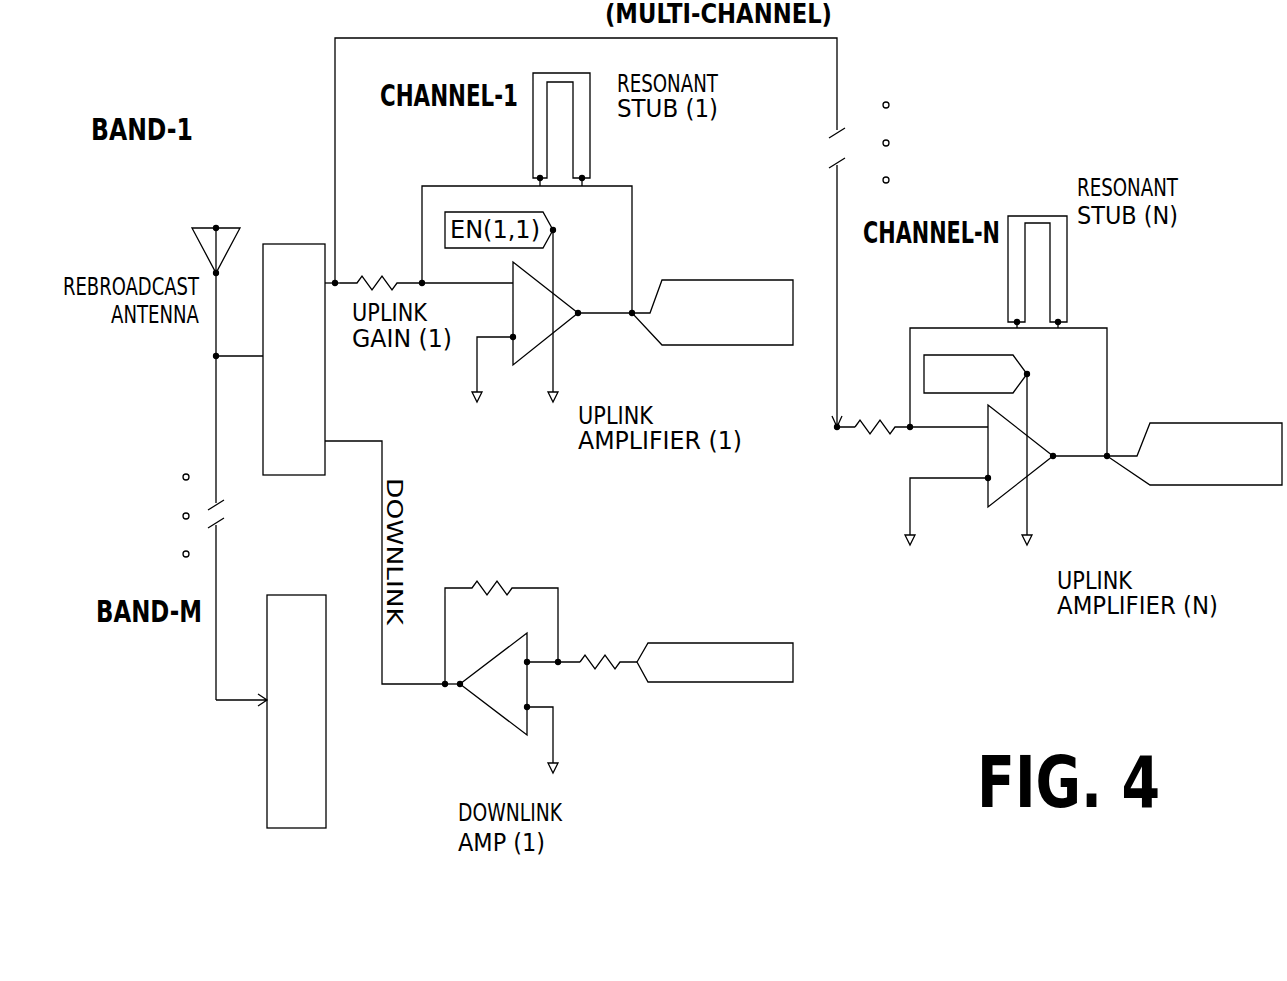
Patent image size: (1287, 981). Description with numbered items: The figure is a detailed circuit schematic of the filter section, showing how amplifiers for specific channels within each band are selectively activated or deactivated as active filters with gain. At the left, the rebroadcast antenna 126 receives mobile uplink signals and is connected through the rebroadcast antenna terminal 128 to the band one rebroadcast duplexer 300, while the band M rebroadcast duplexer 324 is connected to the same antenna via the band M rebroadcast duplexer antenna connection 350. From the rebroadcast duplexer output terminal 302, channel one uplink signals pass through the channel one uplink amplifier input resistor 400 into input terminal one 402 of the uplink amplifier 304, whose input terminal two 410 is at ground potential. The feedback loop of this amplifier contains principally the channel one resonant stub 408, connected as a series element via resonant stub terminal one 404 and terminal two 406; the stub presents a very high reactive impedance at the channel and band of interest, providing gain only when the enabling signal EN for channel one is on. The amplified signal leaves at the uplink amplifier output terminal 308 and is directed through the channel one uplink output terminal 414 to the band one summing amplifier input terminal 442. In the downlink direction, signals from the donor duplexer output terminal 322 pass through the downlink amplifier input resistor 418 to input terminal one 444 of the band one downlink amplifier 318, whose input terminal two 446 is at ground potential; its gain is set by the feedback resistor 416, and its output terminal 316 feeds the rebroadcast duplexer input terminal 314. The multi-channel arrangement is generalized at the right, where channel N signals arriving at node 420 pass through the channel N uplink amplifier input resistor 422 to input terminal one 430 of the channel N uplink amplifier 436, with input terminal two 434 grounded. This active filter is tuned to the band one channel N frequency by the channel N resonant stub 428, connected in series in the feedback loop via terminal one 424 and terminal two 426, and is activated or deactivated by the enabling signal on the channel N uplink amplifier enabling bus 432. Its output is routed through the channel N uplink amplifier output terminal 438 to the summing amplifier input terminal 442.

The rebroadcast antenna 126 is at (198, 216).
The band 1 rebroadcast duplexer 300 is at (282, 241).
The rebroadcast antenna terminal 128 is at (258, 365).
The band M rebroadcast duplexer 324 is at (282, 589).
The band M rebroadcast duplexer antenna connection 350 is at (253, 732).
The band 1 rebroadcast duplexer output terminal 302 is at (342, 290).
The channel 1 uplink amplifier input resistor 400 is at (392, 270).
The channel 1 uplink amplifier input terminal 1 402 is at (507, 292).
The uplink amplifier 1 304 is at (563, 337).
The band 1 uplink amplifier output terminal 308 is at (580, 303).
The channel 1 uplink amplifier input terminal 2 410 is at (508, 343).
The channel 1 uplink output terminal 414 is at (640, 302).
The channel 1 resonant stub 408 is at (595, 125).
The channel 1 resonant stub terminal 1 404 is at (523, 177).
The channel 1 resonant stub terminal 2 406 is at (578, 187).
The band 1 rebroadcast duplexer input terminal 314 is at (330, 449).
The band 1 downlink amplifier output terminal 316 is at (457, 693).
The band 1 downlink amplifier 318 is at (492, 722).
The channel 1 downlink amplifier feedback resistor 416 is at (502, 573).
The downlink amplifier input node 444 is at (533, 650).
The channel 1 downlink amplifier input resistor 418 is at (605, 648).
The band 1 donor duplexer output terminal 322 is at (635, 677).
The downlink amplifier ground 446 is at (533, 698).
The channel N input node 420 is at (833, 435).
The channel N uplink amplifier input resistor 422 is at (892, 412).
The channel N uplink amplifier input terminal 1 430 is at (983, 433).
The channel N uplink amplifier enabling bus 432 is at (1033, 428).
The channel N uplink amplifier 436 is at (1040, 477).
The channel N uplink amplifier output terminal 438 is at (1060, 465).
The channel N uplink amplifier input terminal 2 434 is at (983, 483).
The band 1 summing amplifier input terminal 442 is at (1122, 448).
The channel N resonant stub 428 is at (1075, 262).
The channel N resonant stub terminal 1 424 is at (1005, 320).
The channel N resonant stub terminal 2 426 is at (1055, 332).